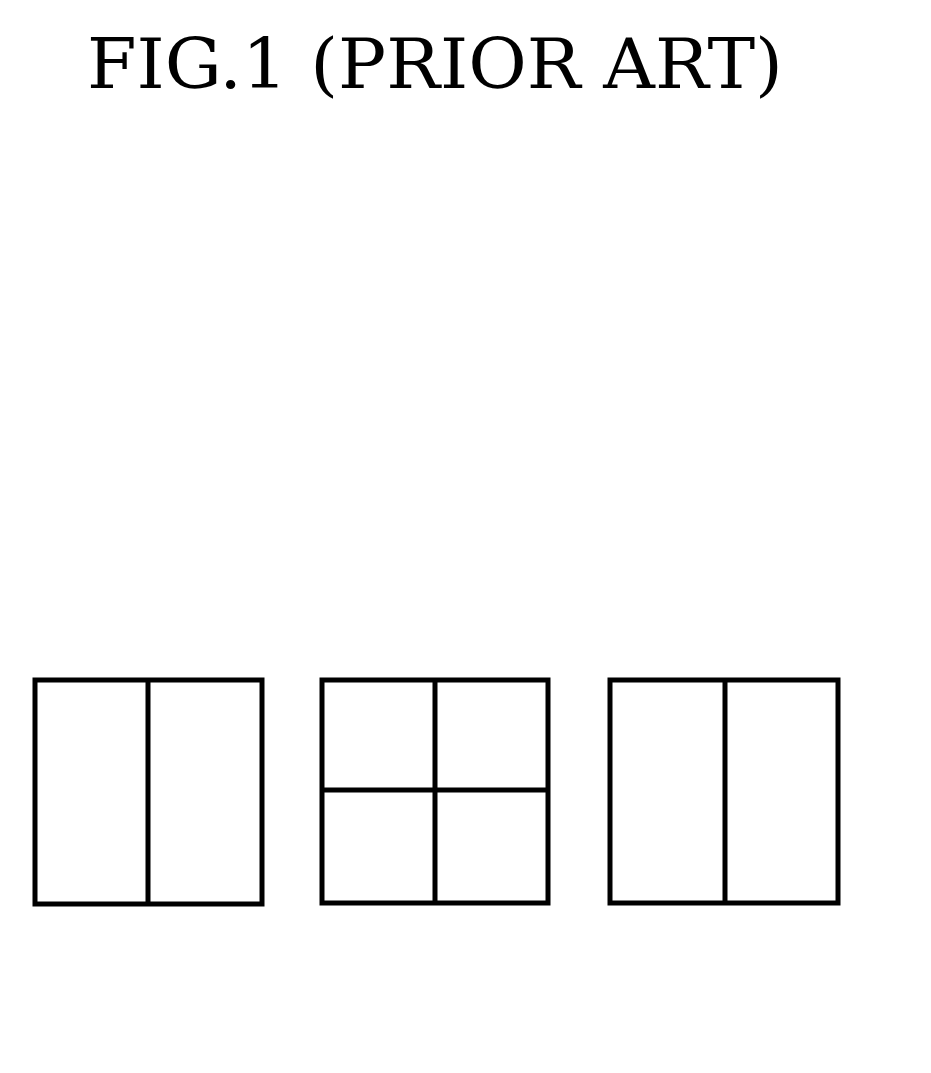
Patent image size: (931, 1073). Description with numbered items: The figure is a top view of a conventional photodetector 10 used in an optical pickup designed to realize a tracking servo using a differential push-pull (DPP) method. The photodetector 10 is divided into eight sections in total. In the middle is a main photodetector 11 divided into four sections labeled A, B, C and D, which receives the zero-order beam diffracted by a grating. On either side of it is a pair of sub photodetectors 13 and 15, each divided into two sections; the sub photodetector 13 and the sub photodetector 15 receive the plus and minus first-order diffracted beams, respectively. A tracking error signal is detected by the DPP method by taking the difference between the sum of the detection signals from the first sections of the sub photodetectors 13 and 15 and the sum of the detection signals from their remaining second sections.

The photodetector 10 is at (253, 512).
The main photodetector 11 is at (478, 680).
The sub photodetector 13 is at (110, 680).
The sub photodetector 15 is at (670, 680).